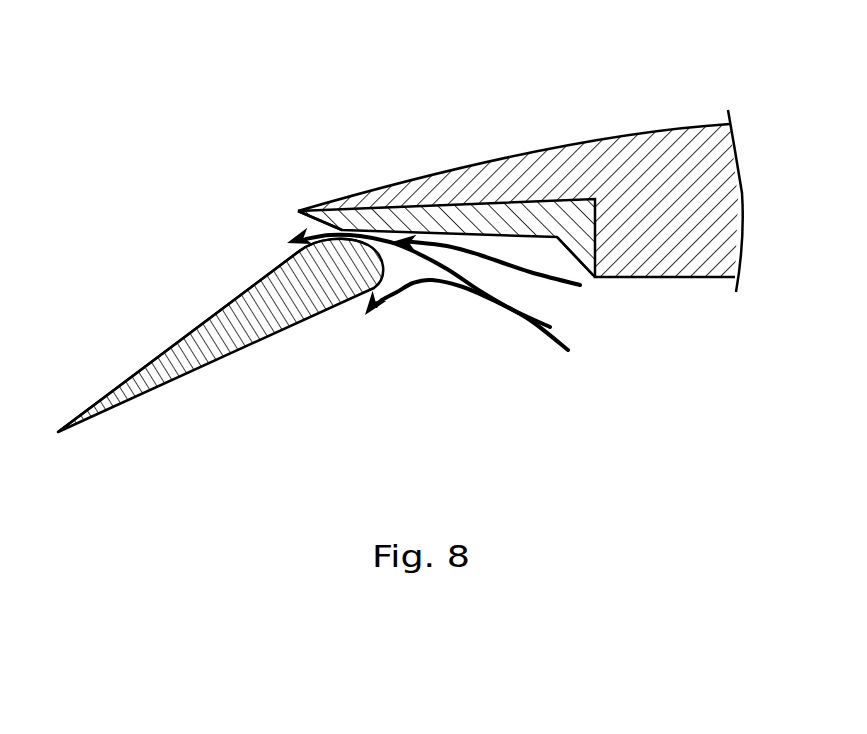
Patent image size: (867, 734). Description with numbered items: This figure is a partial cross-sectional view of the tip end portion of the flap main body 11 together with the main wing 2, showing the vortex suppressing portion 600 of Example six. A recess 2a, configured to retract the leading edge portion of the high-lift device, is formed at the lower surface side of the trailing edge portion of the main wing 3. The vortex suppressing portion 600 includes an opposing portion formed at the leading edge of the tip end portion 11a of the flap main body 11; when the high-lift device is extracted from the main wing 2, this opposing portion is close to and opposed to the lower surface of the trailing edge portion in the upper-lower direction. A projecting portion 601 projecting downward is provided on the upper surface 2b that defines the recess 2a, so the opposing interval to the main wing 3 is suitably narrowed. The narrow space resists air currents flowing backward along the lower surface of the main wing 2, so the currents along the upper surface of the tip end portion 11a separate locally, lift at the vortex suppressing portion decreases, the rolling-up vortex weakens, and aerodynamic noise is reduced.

The main wing 2 is at (648, 150).
The recess 2a is at (590, 273).
The upper surface 2b is at (467, 202).
The main wing (high-lift device) 3 is at (214, 274).
The flap main body 11 is at (262, 342).
The tip end portion 11a is at (211, 338).
The vortex suppressing portion 600 is at (380, 268).
The projecting portion 601 is at (350, 212).